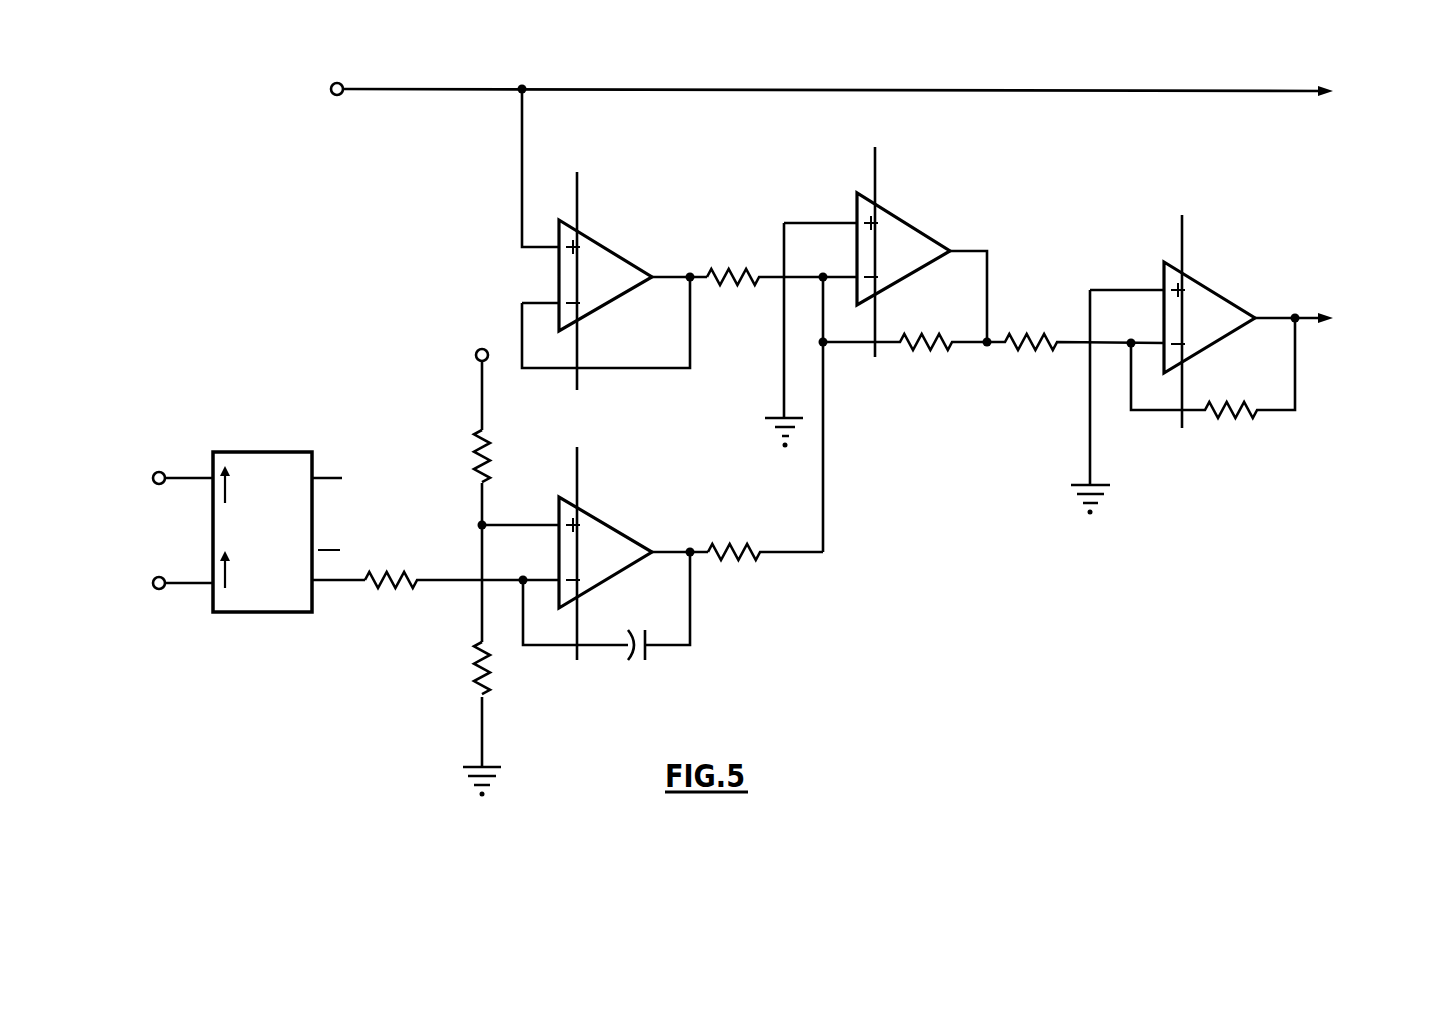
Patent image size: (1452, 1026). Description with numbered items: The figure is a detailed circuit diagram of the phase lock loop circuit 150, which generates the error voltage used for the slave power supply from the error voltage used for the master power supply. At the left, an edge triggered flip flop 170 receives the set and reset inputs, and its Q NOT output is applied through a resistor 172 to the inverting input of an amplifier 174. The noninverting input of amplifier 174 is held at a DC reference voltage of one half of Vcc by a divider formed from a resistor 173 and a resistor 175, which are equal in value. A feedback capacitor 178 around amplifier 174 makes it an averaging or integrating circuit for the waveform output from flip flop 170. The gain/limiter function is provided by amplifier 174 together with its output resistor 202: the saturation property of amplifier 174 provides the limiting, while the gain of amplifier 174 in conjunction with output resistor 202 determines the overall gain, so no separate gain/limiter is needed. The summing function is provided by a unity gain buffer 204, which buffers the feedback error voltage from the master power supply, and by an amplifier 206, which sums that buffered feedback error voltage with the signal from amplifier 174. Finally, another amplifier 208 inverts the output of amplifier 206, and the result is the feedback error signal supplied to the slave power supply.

The phase lock loop circuit 150 is at (783, 480).
The edge triggered flip flop 170 is at (275, 452).
The resistor 172 is at (378, 570).
The resistor 173 is at (478, 462).
The amplifier 174 is at (600, 517).
The resistor 175 is at (478, 678).
The feedback capacitor 178 is at (652, 650).
The output resistor 202 is at (745, 562).
The unity gain buffer 204 is at (604, 307).
The amplifier 206 is at (893, 215).
The amplifier 208 is at (1197, 280).